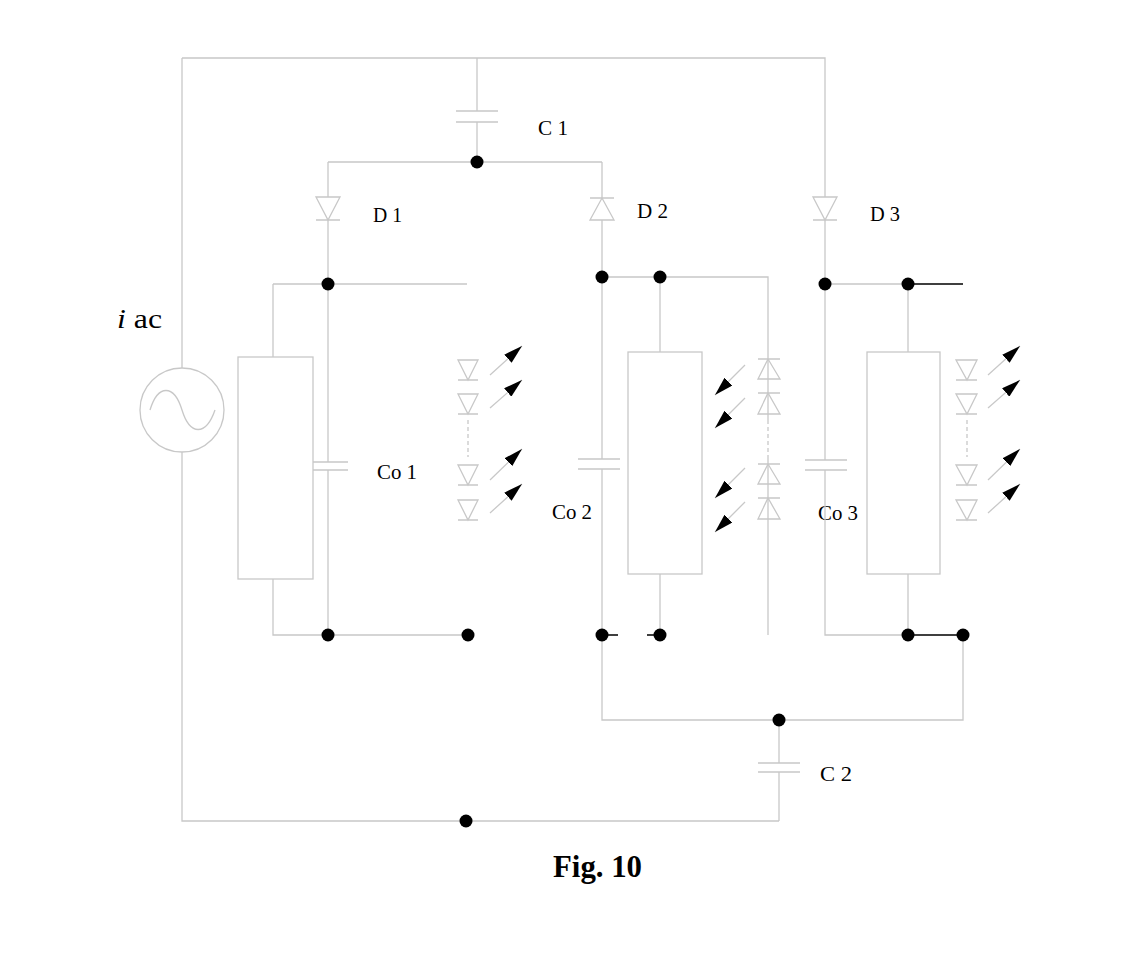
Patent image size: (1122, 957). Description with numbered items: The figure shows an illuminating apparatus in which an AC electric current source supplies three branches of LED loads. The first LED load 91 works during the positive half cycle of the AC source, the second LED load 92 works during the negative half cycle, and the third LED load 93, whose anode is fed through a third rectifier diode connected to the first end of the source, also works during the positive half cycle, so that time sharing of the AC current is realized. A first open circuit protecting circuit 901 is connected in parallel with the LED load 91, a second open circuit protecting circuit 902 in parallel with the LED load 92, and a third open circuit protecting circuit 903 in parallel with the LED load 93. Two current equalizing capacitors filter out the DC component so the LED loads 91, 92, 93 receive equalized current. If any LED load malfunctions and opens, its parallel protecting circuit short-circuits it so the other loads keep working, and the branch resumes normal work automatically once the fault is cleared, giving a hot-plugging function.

The open circuit protecting circuit 901 is at (275, 468).
The open circuit protecting circuit 902 is at (665, 463).
The open circuit protecting circuit 903 is at (903, 463).
The LED load 91 is at (454, 421).
The LED load 92 is at (737, 427).
The LED load 93 is at (1014, 412).